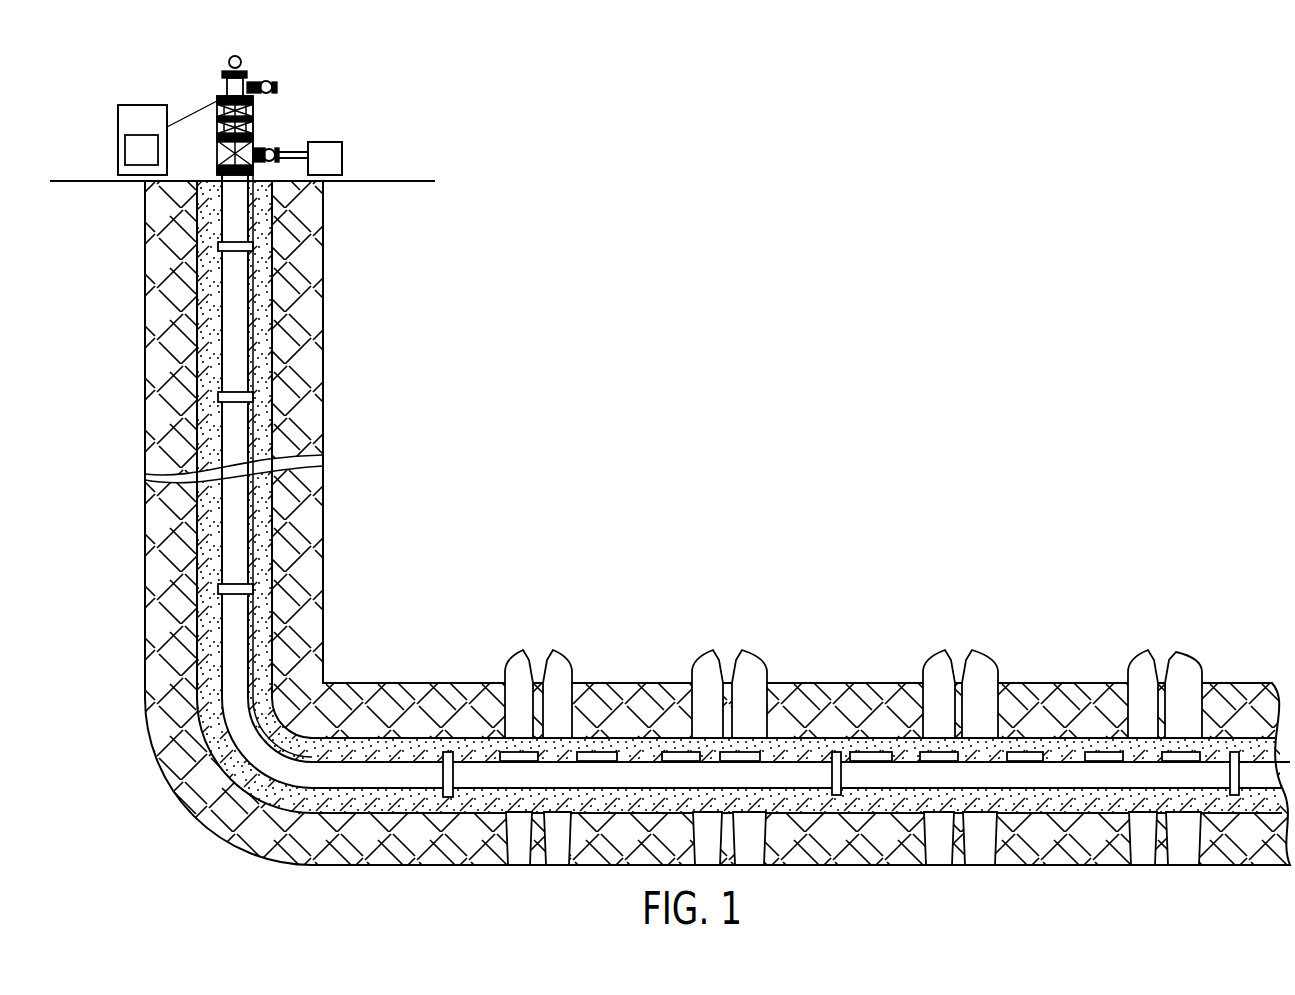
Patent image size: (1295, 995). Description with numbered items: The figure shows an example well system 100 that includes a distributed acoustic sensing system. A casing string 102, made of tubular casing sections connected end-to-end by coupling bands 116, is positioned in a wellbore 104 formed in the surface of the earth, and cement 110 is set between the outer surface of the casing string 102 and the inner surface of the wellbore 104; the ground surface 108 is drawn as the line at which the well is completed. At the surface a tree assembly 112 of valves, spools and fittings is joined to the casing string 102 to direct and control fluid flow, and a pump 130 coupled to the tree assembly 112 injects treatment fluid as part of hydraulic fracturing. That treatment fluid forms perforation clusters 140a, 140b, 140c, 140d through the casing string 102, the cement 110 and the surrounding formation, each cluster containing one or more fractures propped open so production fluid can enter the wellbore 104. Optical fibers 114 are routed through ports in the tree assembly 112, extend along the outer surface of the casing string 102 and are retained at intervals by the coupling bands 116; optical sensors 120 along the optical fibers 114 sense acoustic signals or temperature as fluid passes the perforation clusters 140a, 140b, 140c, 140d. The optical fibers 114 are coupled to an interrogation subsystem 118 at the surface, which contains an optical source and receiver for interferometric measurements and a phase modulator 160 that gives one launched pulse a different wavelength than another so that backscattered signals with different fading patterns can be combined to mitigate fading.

The well system 100 is at (421, 79).
The casing string 102 is at (190, 286).
The wellbore 104 is at (212, 190).
The surface 108 is at (423, 179).
The cement 110 is at (316, 600).
The tree assembly 112 is at (253, 128).
The optical fibers 114 is at (217, 93).
The coupling bands 116 is at (258, 392).
The interrogation subsystem 118 is at (137, 103).
The optical sensors 120 is at (857, 736).
The pump 130 is at (342, 157).
The perforation cluster 140a is at (1173, 645).
The perforation cluster 140b is at (970, 645).
The perforation cluster 140c is at (740, 645).
The perforation cluster 140d is at (551, 645).
The phase modulator 160 is at (122, 154).